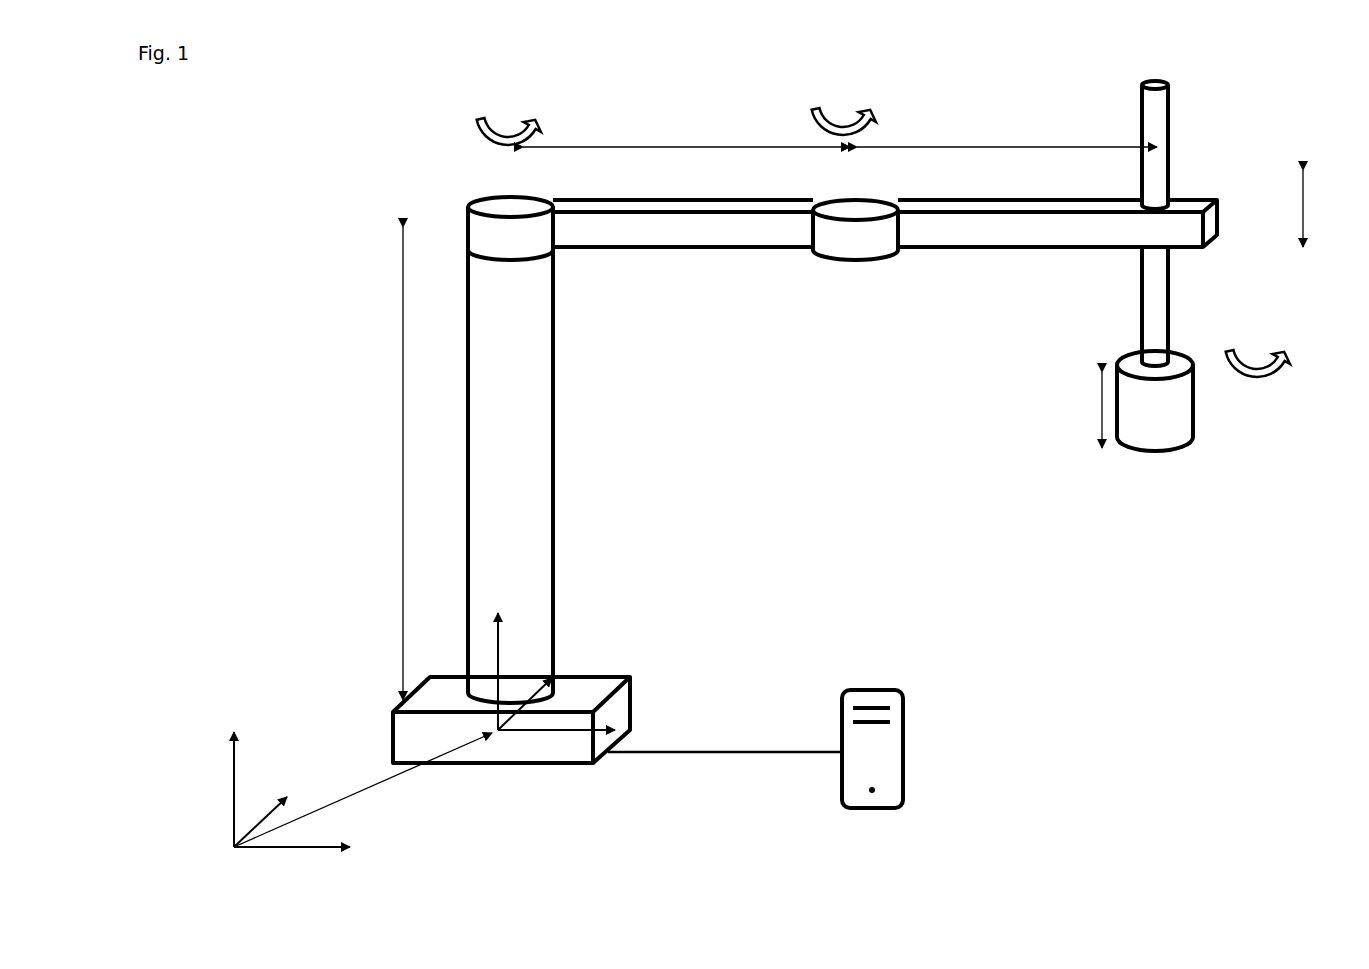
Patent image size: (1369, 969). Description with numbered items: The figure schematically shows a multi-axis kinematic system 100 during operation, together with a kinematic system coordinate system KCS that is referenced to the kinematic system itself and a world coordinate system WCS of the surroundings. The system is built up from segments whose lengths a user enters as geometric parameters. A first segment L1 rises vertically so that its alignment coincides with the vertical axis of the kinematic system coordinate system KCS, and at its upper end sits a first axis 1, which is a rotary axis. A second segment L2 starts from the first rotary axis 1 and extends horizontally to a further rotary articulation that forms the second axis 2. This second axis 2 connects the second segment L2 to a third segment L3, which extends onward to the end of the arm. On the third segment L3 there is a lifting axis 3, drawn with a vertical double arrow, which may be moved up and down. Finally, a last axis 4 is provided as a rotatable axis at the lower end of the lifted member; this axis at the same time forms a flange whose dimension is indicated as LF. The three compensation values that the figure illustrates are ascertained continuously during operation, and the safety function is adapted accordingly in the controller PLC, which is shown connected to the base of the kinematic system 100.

The multi-axis kinematic system 100 is at (845, 450).
The first axis 1 is at (503, 100).
The second axis 2 is at (843, 86).
The lifting axis 3 is at (1299, 205).
The last axis 4 is at (1263, 397).
The first segment L1 is at (395, 331).
The second segment L2 is at (678, 145).
The third segment L3 is at (1018, 143).
The flange dimension LF is at (1100, 425).
The kinematic system coordinate system KCS is at (523, 733).
The world coordinate system WCS is at (245, 853).
The controller PLC is at (903, 772).